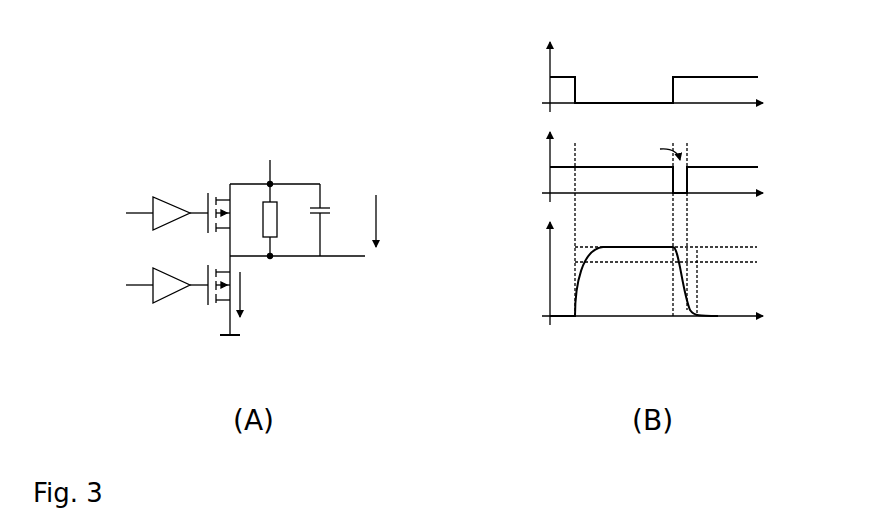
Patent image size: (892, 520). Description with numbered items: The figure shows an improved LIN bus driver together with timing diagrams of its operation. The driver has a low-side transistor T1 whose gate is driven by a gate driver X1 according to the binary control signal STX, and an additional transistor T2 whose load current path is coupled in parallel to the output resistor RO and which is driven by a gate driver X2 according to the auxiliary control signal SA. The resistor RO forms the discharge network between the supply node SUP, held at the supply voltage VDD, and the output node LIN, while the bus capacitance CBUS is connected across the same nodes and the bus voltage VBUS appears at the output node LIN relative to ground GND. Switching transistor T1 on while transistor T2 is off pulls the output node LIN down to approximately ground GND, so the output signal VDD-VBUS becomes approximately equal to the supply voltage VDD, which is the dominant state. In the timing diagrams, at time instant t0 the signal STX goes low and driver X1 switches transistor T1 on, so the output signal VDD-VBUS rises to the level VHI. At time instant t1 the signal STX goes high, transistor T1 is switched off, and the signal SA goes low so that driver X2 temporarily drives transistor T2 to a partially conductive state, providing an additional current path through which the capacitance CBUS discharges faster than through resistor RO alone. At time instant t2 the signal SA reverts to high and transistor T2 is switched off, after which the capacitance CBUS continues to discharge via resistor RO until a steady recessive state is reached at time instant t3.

In FIG. 3A, the auxiliary control signal SA is at (130, 203).
In FIG. 3B, the auxiliary control signal SA is at (646, 174).
In FIG. 3A, the binary control signal STX is at (130, 275).
In FIG. 3B, the binary control signal STX is at (646, 83).
In FIG. 3A, the gate driver X1 is at (180, 279).
In FIG. 3A, the gate driver X2 is at (180, 201).
In FIG. 3A, the transistor T1 is at (210, 295).
In FIG. 3A, the transistor T2 is at (210, 217).
In FIG. 3A, the supply node SUP is at (270, 184).
In FIG. 3A, the output node LIN is at (230, 256).
In FIG. 3A, the supply voltage VDD is at (283, 161).
In FIG. 3A, the output resistor RO is at (282, 221).
In FIG. 3A, the bus capacitance CBUS is at (338, 220).
In FIG. 3A, the bus voltage VBUS is at (262, 294).
In FIG. 3A, the output signal VDD-VBUS is at (416, 221).
In FIG. 3B, the output signal VDD-VBUS is at (623, 279).
In FIG. 3A, the ground potential GND is at (255, 350).
In FIG. 3B, the threshold voltage V_HI VHI is at (678, 266).
In FIG. 3B, the time instant t0 is at (582, 248).
In FIG. 3B, the time instant t1 is at (681, 248).
In FIG. 3B, the time instant t2 is at (696, 226).
In FIG. 3B, the time instant t3 is at (700, 301).